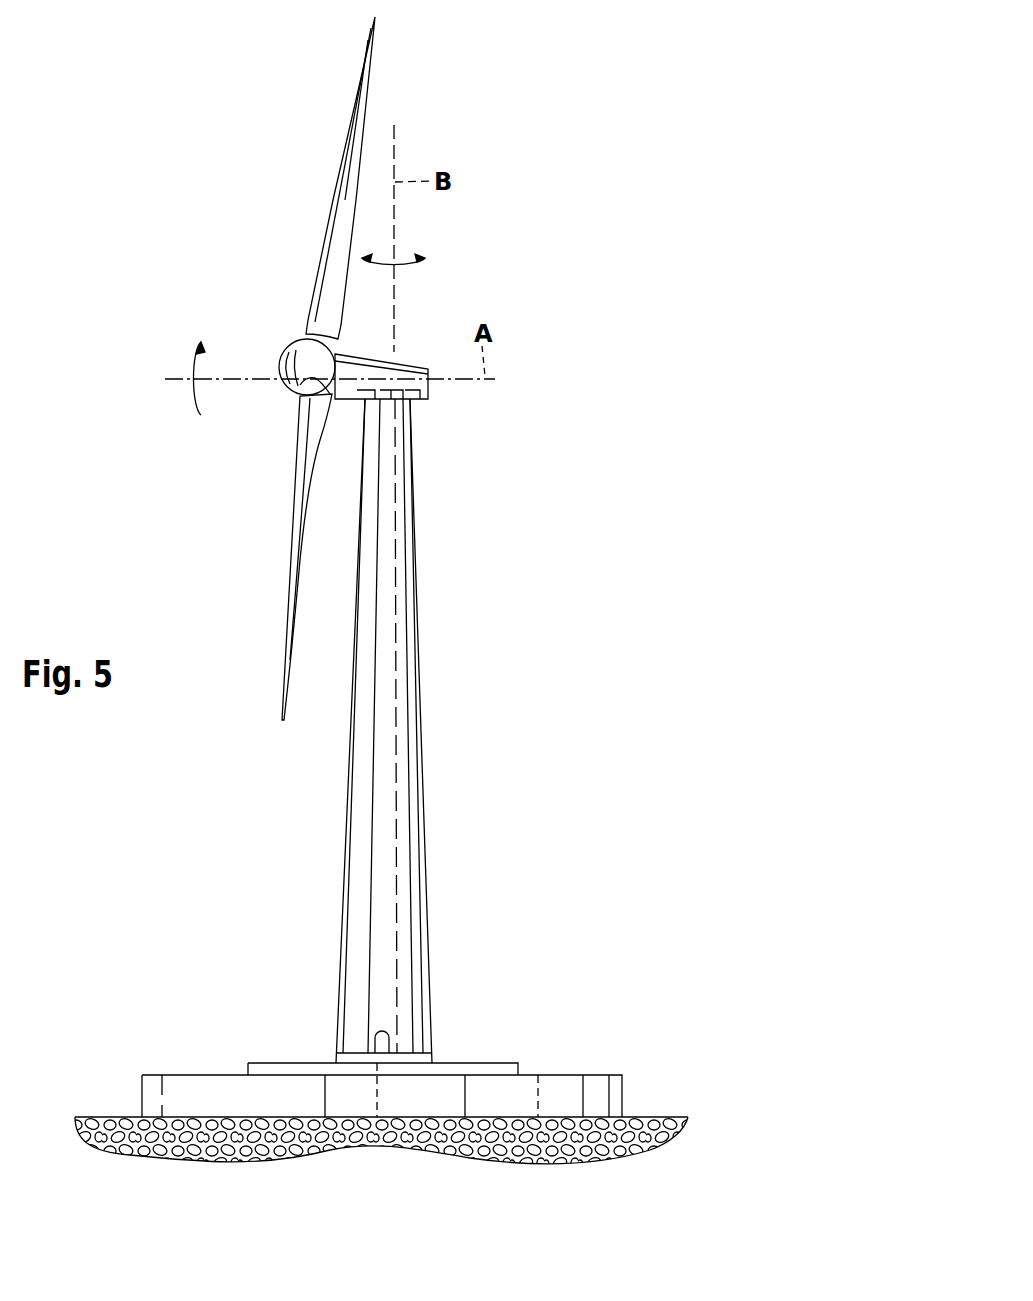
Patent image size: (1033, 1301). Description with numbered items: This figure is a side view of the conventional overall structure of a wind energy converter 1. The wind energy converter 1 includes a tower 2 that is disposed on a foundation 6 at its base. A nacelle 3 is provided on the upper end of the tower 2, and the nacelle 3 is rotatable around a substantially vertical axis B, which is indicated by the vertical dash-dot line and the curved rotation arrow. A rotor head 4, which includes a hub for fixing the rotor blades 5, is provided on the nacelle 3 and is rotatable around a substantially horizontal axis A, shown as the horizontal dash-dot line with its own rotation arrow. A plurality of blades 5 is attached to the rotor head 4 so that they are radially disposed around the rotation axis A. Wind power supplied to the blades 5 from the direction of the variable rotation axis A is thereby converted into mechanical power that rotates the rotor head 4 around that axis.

The wind energy converter 1 is at (139, 166).
The tower 2 is at (390, 733).
The nacelle 3 is at (413, 341).
The rotor head 4 is at (294, 356).
The rotor blades 5 is at (349, 182).
The foundation 6 is at (559, 1090).